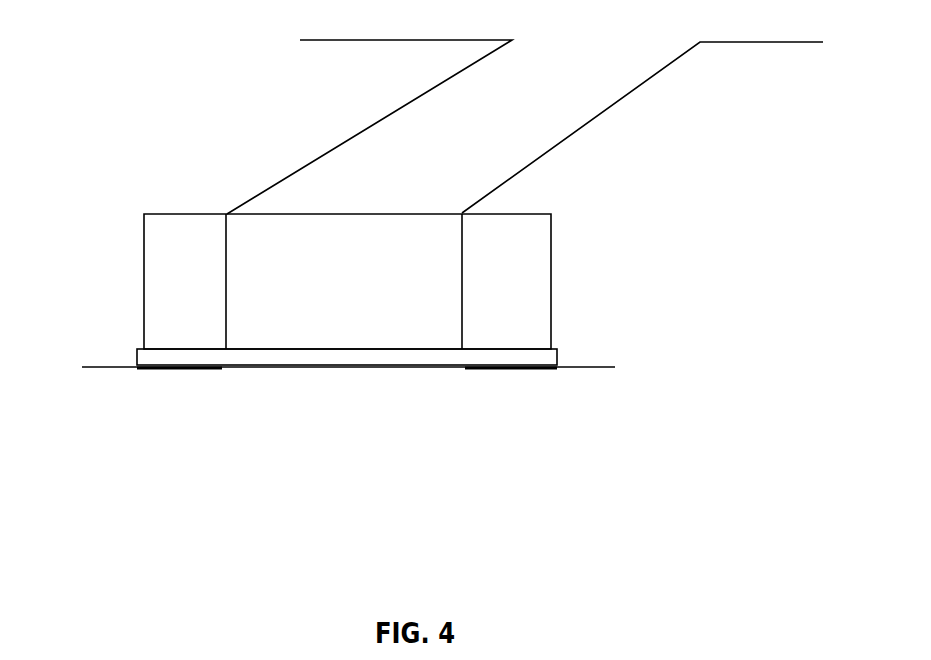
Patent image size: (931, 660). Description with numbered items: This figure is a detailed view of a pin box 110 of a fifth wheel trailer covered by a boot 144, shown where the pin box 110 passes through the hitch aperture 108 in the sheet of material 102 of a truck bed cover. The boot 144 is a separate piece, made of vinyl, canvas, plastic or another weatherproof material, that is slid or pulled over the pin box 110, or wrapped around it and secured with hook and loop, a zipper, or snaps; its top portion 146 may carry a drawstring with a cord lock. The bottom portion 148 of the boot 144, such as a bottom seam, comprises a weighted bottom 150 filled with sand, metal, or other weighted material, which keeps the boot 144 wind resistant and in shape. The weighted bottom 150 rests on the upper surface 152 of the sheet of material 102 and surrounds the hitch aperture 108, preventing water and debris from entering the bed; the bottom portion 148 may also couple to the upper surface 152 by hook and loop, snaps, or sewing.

The sheet of material 102 is at (568, 367).
The hitch aperture 108 is at (413, 379).
The pin box 110 is at (520, 152).
The boot 144 is at (203, 222).
The top portion 146 is at (533, 225).
The bottom portion 148 is at (193, 306).
The weighted bottom 150 is at (338, 365).
The upper surface 152 is at (601, 348).